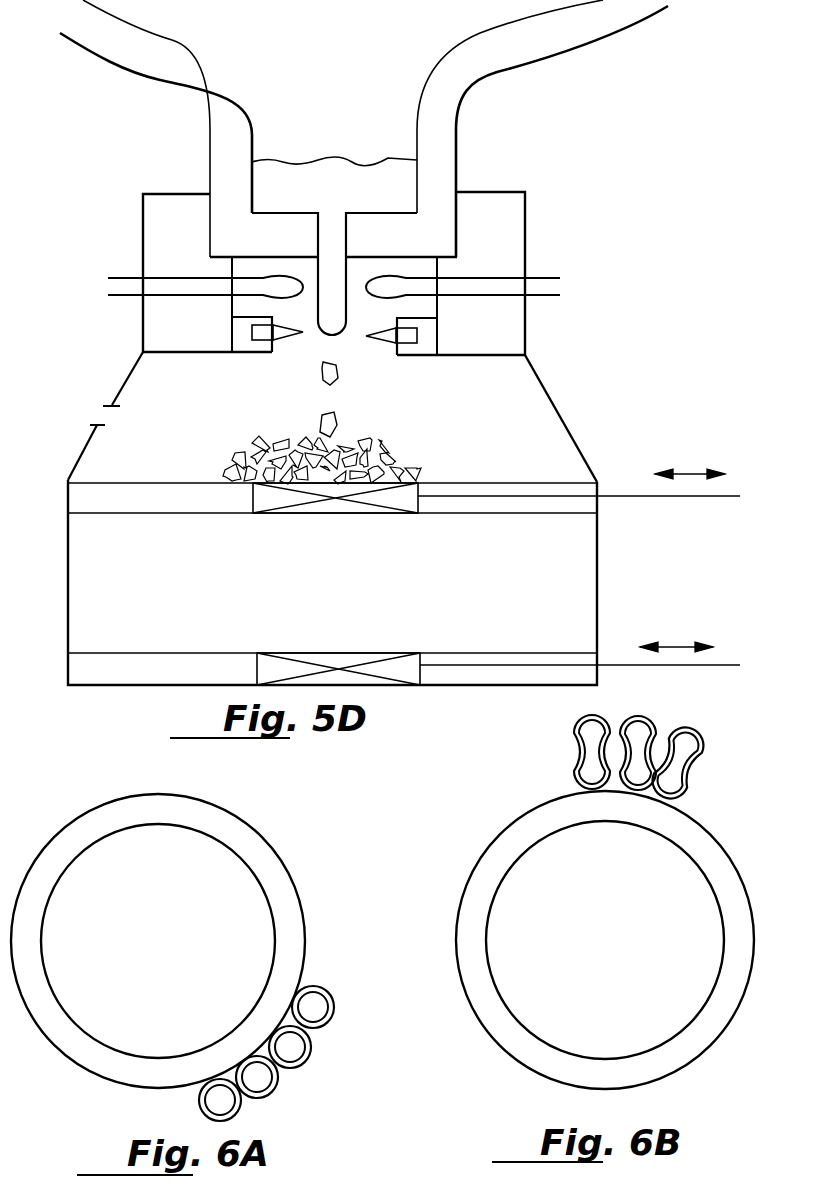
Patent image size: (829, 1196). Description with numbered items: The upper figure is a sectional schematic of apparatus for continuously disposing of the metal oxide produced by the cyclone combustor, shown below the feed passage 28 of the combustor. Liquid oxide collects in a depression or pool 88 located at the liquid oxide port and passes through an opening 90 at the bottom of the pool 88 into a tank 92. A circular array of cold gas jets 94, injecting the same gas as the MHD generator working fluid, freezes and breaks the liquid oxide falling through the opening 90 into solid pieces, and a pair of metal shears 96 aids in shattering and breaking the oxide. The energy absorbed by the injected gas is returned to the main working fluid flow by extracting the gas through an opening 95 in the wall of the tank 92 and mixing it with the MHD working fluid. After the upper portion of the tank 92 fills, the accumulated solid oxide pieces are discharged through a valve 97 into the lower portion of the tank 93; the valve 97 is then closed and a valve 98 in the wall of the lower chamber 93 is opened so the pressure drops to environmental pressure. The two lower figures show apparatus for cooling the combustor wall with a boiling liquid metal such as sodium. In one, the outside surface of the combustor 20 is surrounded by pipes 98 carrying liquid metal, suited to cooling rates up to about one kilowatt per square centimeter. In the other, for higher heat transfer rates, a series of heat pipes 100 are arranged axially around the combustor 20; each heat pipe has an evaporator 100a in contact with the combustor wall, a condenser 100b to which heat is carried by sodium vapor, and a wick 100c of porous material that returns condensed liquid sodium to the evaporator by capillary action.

In FIG. 5D, the feed tube 28 is at (359, 27).
In FIG. 5D, the pool 88 is at (287, 161).
In FIG. 5D, the opening 90 is at (322, 226).
In FIG. 5D, the cold gas jets 94 is at (165, 277).
In FIG. 5D, the opening 95 is at (108, 420).
In FIG. 5D, the metal shears 96 is at (290, 340).
In FIG. 5D, the tank 92 is at (560, 412).
In FIG. 5D, the lower portion of the tank 93 is at (598, 598).
In FIG. 5D, the valve 97 is at (330, 507).
In FIG. 5D, the valve / pipes 98 is at (337, 657).
In FIG. 6A, the valve / pipes 98 is at (328, 1027).
In FIG. 6A, the combustor 20 is at (282, 858).
In FIG. 6B, the combustor 20 is at (508, 825).
In FIG. 6B, the heat pipes 100 is at (634, 766).
In FIG. 6B, the evaporator 100a is at (678, 763).
In FIG. 6B, the condenser 100b is at (666, 747).
In FIG. 6B, the wick 100c is at (693, 753).